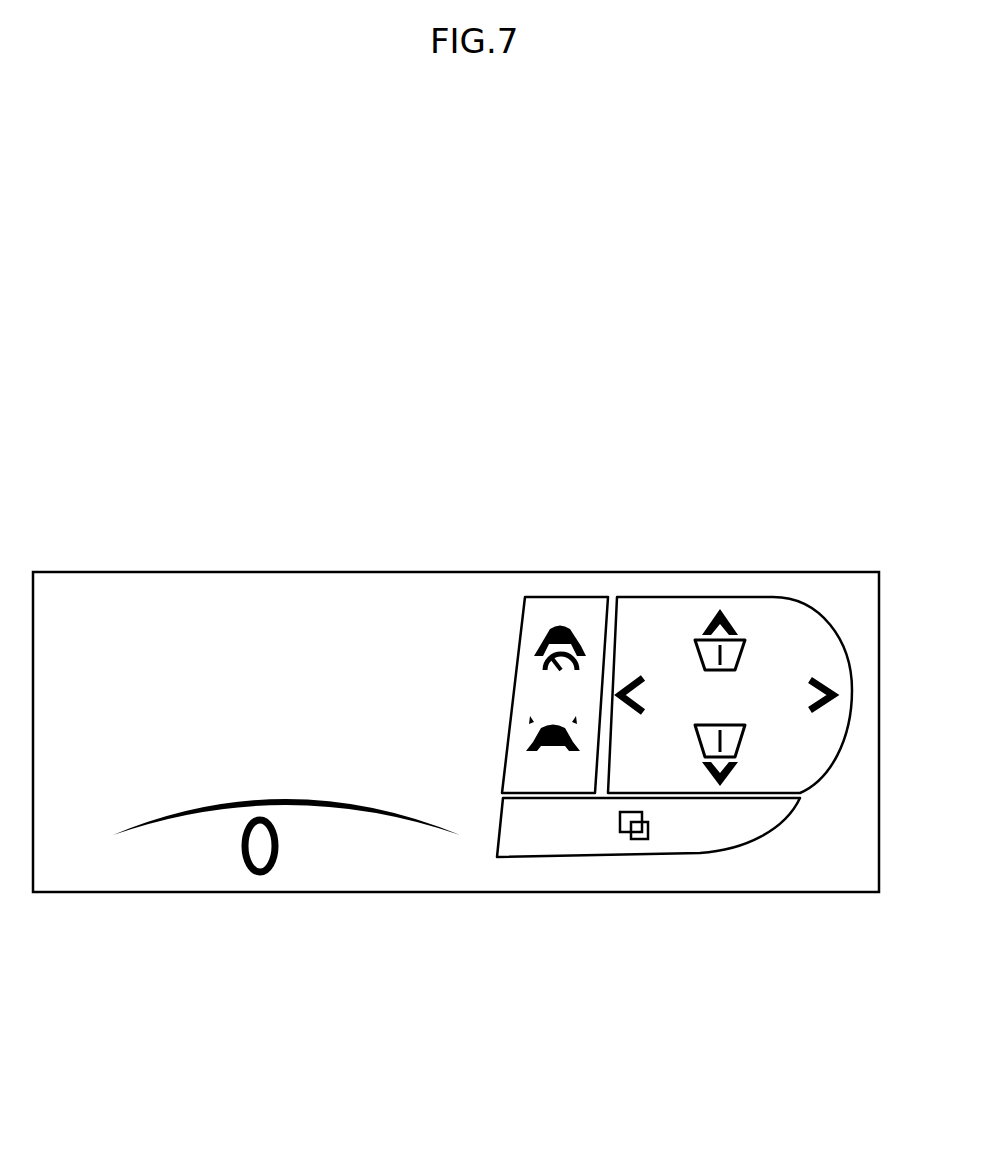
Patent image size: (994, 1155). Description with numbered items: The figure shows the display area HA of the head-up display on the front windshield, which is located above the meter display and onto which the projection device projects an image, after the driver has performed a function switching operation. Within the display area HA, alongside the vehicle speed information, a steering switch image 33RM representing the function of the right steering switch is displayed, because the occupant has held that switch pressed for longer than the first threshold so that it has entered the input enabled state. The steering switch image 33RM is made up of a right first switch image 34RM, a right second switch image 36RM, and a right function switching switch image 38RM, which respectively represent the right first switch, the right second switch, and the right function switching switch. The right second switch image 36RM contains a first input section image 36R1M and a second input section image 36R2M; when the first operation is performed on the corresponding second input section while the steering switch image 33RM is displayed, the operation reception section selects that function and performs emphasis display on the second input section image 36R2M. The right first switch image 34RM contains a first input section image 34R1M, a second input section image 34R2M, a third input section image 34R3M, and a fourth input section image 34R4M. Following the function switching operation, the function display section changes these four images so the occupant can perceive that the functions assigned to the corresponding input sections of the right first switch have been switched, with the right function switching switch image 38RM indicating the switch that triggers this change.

The display area HA is at (73, 571).
The steering switch image 33RM is at (542, 861).
The right second switch image 36RM is at (563, 598).
The first input section image 36R1M is at (542, 662).
The second input section image 36R2M is at (528, 742).
The right first switch image 34RM is at (797, 598).
The first input section image 34R1M is at (697, 643).
The second input section image 34R2M is at (637, 707).
The third input section image 34R3M is at (820, 678).
The fourth input section image 34R4M is at (737, 748).
The right function switching switch image 38RM is at (680, 856).